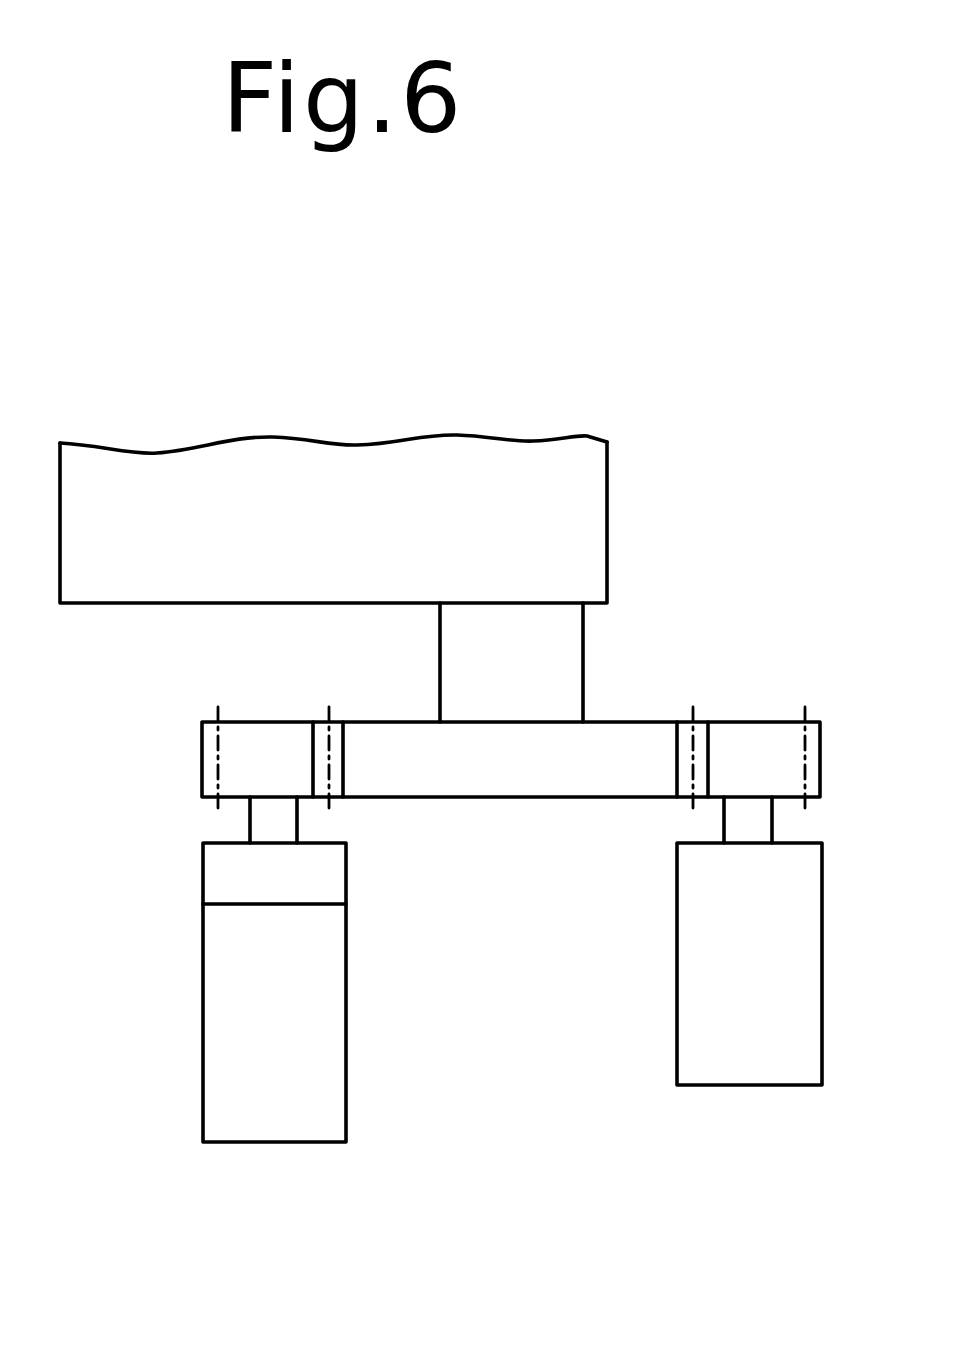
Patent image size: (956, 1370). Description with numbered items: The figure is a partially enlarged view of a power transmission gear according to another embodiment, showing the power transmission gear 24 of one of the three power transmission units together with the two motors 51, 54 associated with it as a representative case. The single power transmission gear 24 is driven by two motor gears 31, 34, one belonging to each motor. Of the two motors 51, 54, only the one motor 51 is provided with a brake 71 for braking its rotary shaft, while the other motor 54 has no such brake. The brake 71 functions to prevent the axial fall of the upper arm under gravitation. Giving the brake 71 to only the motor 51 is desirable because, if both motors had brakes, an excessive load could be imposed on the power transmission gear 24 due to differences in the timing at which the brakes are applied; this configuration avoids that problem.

The power transmission gear 24 is at (550, 785).
The motor gear 31 is at (268, 738).
The motor gear 34 is at (753, 743).
The motor 51 is at (285, 1107).
The motor 54 is at (762, 1057).
The brake 71 is at (242, 878).